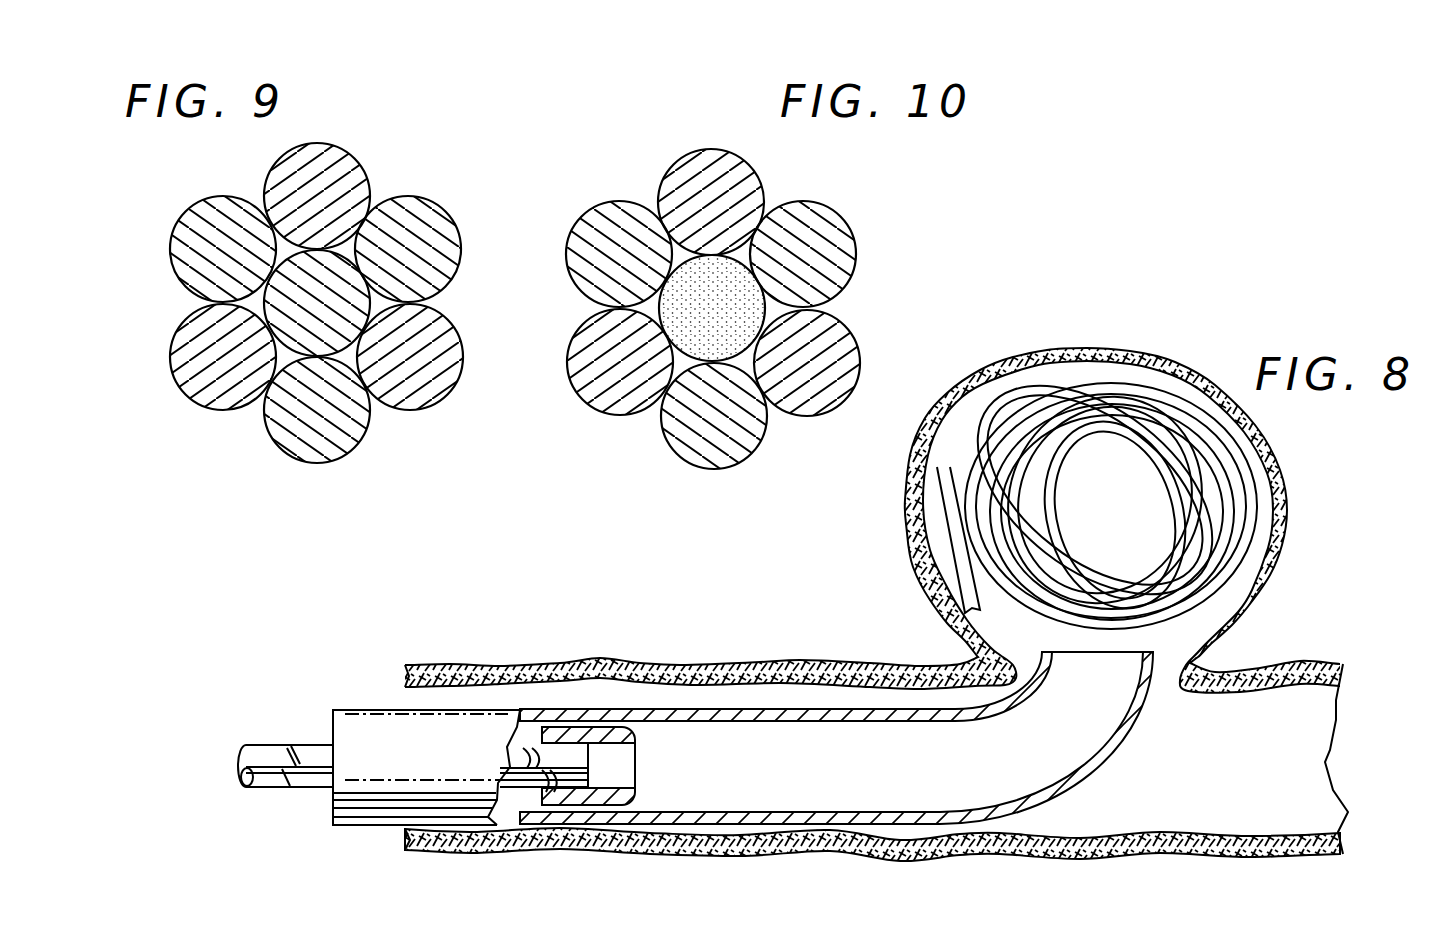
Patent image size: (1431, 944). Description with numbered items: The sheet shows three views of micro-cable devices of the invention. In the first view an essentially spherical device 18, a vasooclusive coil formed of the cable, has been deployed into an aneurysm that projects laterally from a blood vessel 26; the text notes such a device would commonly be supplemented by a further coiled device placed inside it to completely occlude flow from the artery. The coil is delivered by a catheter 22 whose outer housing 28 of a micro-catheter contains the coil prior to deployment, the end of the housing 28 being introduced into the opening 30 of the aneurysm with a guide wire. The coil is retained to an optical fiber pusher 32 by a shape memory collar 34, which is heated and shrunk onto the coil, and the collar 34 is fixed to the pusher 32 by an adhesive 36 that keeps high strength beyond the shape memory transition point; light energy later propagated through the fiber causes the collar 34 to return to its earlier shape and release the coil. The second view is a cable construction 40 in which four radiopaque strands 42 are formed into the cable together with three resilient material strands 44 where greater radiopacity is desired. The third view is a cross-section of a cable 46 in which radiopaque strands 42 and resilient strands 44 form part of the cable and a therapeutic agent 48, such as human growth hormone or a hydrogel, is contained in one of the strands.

In FIG. 8, the spherical device 18 is at (1232, 476).
In FIG. 8, the catheter 22 is at (381, 676).
In FIG. 8, the blood vessel 26 is at (1305, 662).
In FIG. 8, the outer housing 28 is at (765, 710).
In FIG. 8, the opening 30 is at (968, 653).
In FIG. 8, the optical fiber pusher 32 is at (280, 750).
In FIG. 8, the shape memory collar 34 is at (635, 745).
In FIG. 8, the adhesive 36 is at (530, 730).
In FIG. 9, the cable construction 40 is at (334, 308).
In FIG. 9, the radiopaque strands 42 is at (181, 236).
In FIG. 10, the radiopaque strands 42 is at (843, 260).
In FIG. 9, the resilient material strands 44 is at (353, 175).
In FIG. 10, the resilient material strands 44 is at (847, 348).
In FIG. 10, the cable 46 is at (756, 303).
In FIG. 10, the therapeutic agent 48 is at (708, 348).